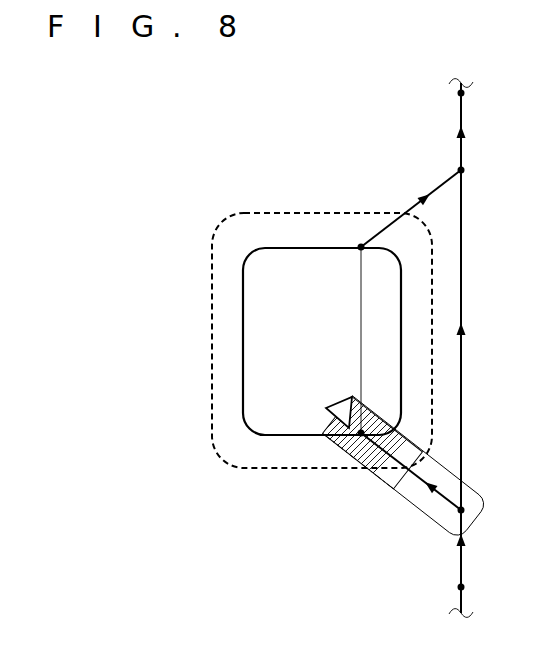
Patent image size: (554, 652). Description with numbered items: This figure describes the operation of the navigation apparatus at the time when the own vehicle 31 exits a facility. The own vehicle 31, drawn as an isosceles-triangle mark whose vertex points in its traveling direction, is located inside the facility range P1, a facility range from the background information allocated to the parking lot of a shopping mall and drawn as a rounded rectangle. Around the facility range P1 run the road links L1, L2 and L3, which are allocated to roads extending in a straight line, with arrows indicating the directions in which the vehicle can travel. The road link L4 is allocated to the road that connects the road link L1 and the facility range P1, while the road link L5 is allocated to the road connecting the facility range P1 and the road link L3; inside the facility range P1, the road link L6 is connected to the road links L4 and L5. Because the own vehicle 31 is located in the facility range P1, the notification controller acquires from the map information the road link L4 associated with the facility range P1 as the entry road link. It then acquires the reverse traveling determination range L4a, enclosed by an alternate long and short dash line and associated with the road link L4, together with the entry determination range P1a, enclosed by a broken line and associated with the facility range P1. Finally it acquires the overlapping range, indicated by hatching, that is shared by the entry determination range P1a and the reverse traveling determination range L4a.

The entry determination range P1a is at (328, 212).
The facility range P1 is at (320, 248).
The road link L1 is at (463, 557).
The road link L2 is at (462, 303).
The road link L3 is at (463, 113).
The road link L4 is at (414, 476).
The reverse traveling determination range L4a is at (376, 480).
The road link L5 is at (438, 186).
The road link L6 is at (361, 303).
The own vehicle 31 is at (334, 405).